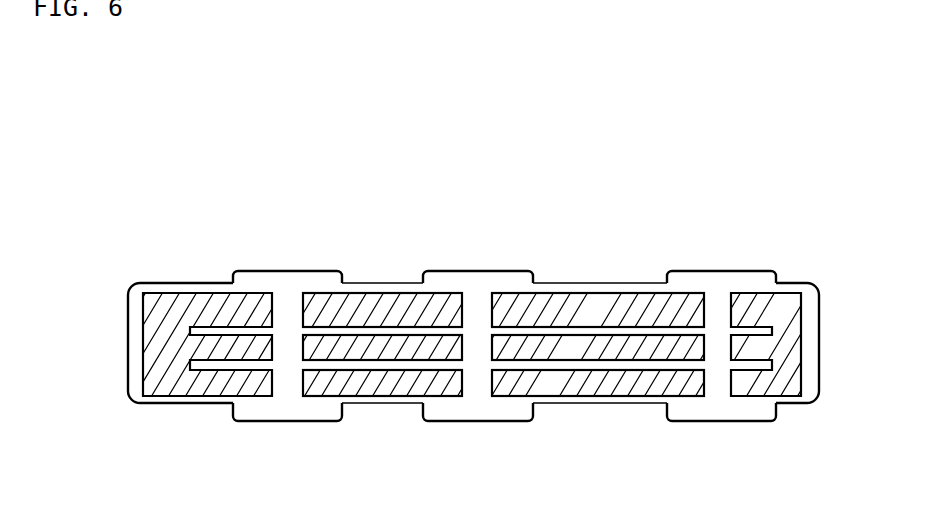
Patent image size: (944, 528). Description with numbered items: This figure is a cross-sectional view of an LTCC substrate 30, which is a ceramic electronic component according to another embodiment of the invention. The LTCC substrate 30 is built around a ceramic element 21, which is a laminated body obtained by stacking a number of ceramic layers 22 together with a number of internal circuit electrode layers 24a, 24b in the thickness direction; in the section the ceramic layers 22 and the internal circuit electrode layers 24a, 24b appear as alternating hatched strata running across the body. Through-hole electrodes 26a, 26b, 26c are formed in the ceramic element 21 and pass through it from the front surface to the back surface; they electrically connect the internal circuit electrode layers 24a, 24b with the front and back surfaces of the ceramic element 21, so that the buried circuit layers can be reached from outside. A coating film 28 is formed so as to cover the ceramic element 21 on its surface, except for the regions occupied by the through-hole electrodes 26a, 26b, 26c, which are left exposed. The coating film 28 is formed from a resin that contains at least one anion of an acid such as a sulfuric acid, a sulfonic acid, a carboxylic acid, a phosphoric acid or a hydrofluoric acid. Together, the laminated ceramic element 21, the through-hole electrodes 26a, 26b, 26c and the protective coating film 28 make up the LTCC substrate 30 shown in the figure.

The LTCC substrate 30 is at (160, 135).
The ceramic element 21 is at (593, 312).
The ceramic layers 22 is at (217, 312).
The internal circuit electrode layer 24a is at (630, 335).
The internal circuit electrode layer 24b is at (628, 363).
The through-hole electrode 26a is at (283, 297).
The through-hole electrode 26b is at (467, 298).
The through-hole electrode 26c is at (713, 277).
The coating film 28 is at (182, 283).